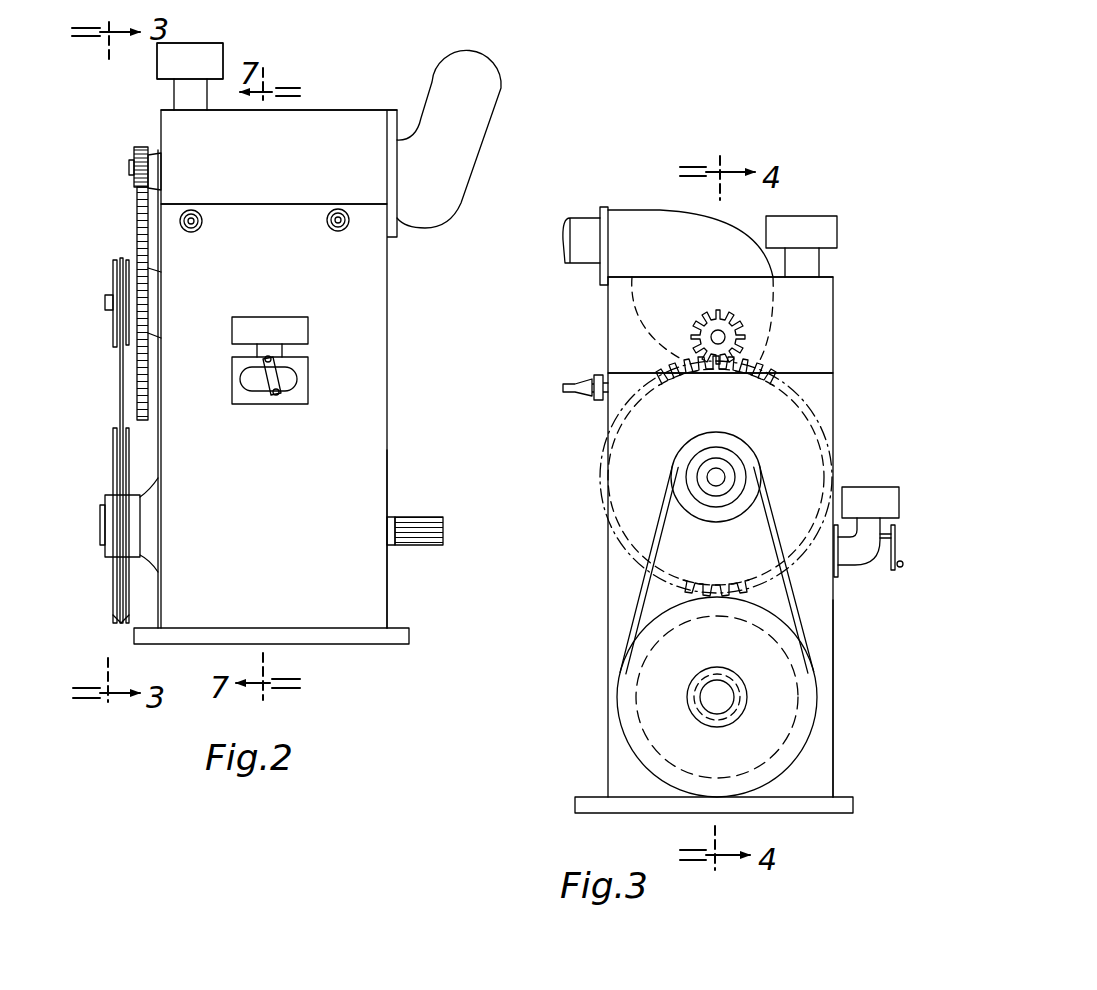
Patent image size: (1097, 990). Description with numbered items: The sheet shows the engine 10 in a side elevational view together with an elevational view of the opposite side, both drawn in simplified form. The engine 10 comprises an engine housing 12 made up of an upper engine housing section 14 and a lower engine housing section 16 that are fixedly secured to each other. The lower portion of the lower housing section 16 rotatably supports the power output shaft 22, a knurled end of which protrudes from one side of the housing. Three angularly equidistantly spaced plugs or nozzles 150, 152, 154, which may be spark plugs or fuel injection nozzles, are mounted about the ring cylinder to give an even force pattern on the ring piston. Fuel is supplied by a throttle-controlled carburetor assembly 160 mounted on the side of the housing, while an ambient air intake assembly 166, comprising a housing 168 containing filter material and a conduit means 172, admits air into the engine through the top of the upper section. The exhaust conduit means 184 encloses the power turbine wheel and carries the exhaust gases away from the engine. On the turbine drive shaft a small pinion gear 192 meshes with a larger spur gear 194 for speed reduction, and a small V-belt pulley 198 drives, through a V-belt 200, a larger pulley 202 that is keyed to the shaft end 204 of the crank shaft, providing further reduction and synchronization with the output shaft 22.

In FIG. 2, the engine 10 is at (397, 306).
In FIG. 3, the engine 10 is at (596, 678).
In FIG. 2, the engine housing 12 is at (392, 408).
In FIG. 3, the engine housing 12 is at (838, 408).
In FIG. 2, the upper engine housing section 14 is at (348, 110).
In FIG. 3, the upper engine housing section 14 is at (833, 318).
In FIG. 2, the lower engine housing section 16 is at (390, 466).
In FIG. 3, the lower engine housing section 16 is at (833, 722).
In FIG. 2, the power output shaft 22 is at (416, 514).
In FIG. 3, the plug or nozzle 150 is at (588, 393).
In FIG. 2, the plug or nozzle 152 is at (200, 229).
In FIG. 2, the plug or nozzle 154 is at (329, 229).
In FIG. 2, the carburetor assembly 160 is at (312, 336).
In FIG. 3, the carburetor assembly 160 is at (902, 500).
In FIG. 2, the ambient air intake assembly 166 is at (155, 70).
In FIG. 2, the housing 168 is at (226, 53).
In FIG. 3, the housing 168 is at (842, 231).
In FIG. 2, the conduit means 172 is at (174, 97).
In FIG. 3, the conduit means 172 is at (820, 265).
In FIG. 2, the exhaust conduit means 184 is at (503, 98).
In FIG. 3, the exhaust conduit means 184 is at (635, 210).
In FIG. 2, the pinion gear 192 is at (134, 148).
In FIG. 3, the pinion gear 192 is at (726, 311).
In FIG. 2, the spur gear 194 is at (137, 231).
In FIG. 3, the spur gear 194 is at (800, 392).
In FIG. 2, the V-belt pulley 198 is at (112, 262).
In FIG. 2, the V-belt 200 is at (118, 375).
In FIG. 3, the V-belt 200 is at (658, 525).
In FIG. 2, the pulley 202 is at (113, 432).
In FIG. 3, the pulley 202 is at (752, 590).
In FIG. 3, the shaft end 204 is at (700, 708).